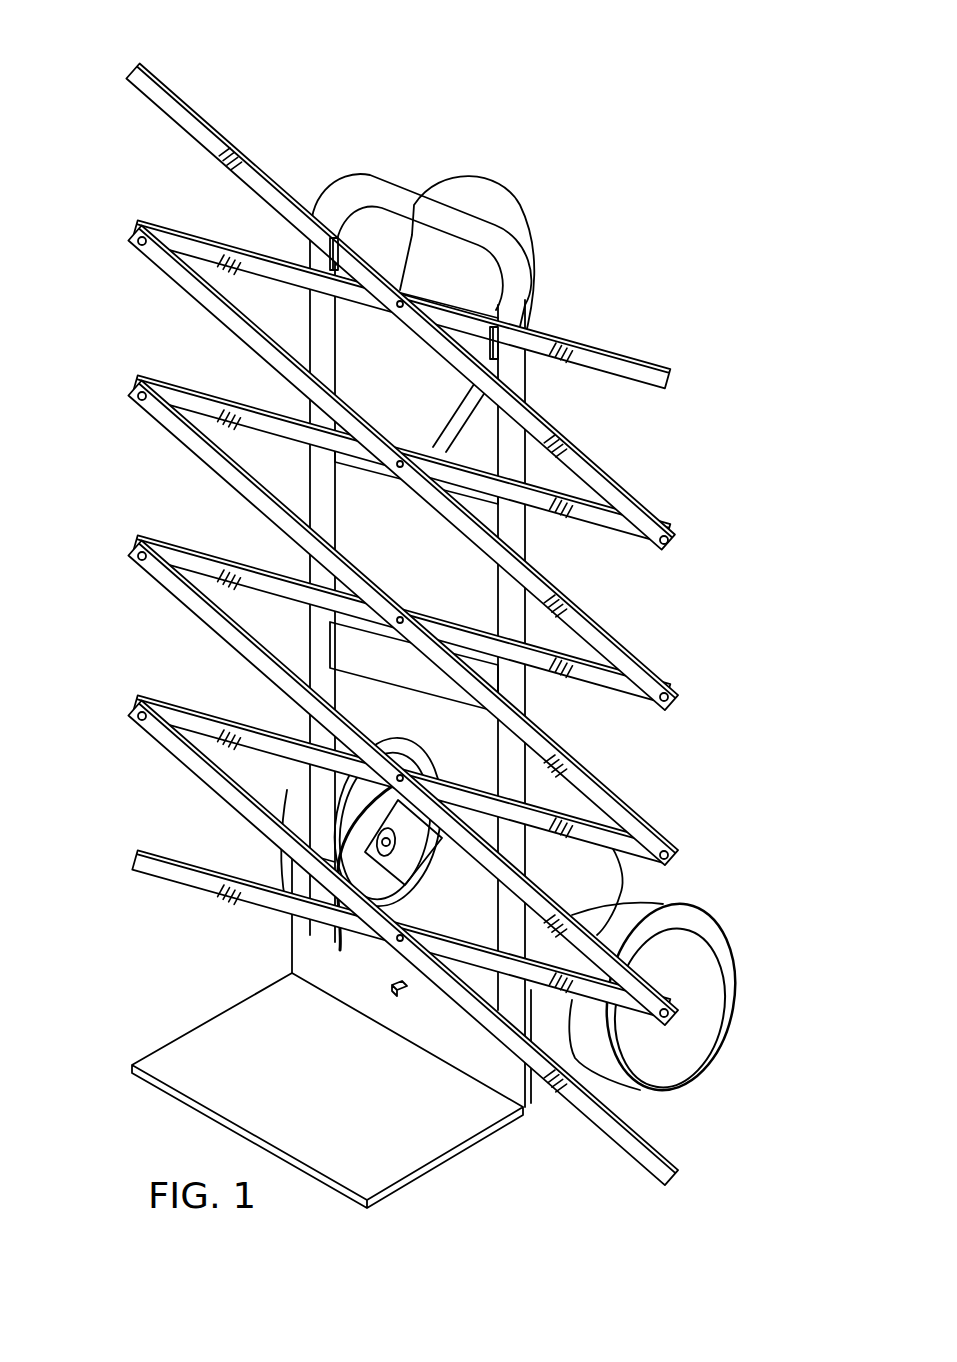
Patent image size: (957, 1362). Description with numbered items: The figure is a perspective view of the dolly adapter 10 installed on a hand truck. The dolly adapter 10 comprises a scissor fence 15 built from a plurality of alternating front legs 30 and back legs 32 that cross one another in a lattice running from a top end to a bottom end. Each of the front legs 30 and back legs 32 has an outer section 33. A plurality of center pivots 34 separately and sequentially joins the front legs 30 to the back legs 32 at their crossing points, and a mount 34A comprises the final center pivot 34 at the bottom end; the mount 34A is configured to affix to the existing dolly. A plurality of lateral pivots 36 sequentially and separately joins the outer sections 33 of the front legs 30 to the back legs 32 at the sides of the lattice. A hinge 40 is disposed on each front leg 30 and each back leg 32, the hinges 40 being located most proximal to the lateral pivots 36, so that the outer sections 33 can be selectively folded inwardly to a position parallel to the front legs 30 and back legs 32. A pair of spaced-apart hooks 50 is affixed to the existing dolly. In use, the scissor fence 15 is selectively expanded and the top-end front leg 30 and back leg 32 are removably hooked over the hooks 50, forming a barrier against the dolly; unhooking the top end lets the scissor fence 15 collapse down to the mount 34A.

The dolly adapter 10 is at (271, 121).
The scissor fence 15 is at (468, 215).
The front legs 30 is at (398, 298).
The back legs 32 is at (358, 300).
The outer section 33 is at (174, 90).
The center pivots 34 is at (404, 298).
The mount 34A is at (395, 995).
The lateral pivots 36 is at (131, 232).
The hinge 40 is at (224, 250).
The hooks 50 is at (334, 238).